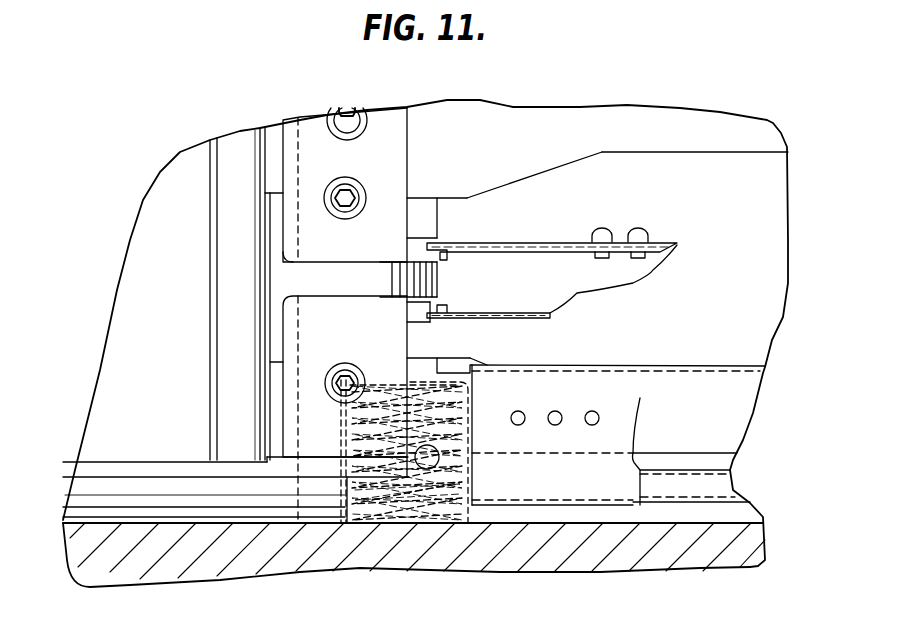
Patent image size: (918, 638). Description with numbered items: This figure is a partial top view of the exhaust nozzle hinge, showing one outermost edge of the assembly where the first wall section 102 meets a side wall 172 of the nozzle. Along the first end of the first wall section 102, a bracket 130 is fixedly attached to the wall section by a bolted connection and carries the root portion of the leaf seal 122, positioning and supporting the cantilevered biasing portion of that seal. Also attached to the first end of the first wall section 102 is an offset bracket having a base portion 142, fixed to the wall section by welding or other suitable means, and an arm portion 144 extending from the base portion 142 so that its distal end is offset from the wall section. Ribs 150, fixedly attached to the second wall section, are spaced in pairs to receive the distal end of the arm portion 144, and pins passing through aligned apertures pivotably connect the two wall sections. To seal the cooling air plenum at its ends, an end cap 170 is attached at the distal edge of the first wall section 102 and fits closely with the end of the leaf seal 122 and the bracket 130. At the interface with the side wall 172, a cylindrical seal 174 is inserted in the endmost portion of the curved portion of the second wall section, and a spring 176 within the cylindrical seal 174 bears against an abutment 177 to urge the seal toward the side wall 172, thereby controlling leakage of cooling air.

The first wall section 102 is at (230, 130).
The leaf seal 122 is at (408, 132).
The bracket 130 is at (330, 243).
The base portion 142 is at (273, 238).
The arm portion 144 is at (372, 268).
The ribs 150 is at (523, 317).
The end cap 170 is at (325, 455).
The side wall 172 is at (485, 563).
The cylindrical seal 174 is at (412, 487).
The spring 176 is at (427, 530).
The abutment 177 is at (450, 363).